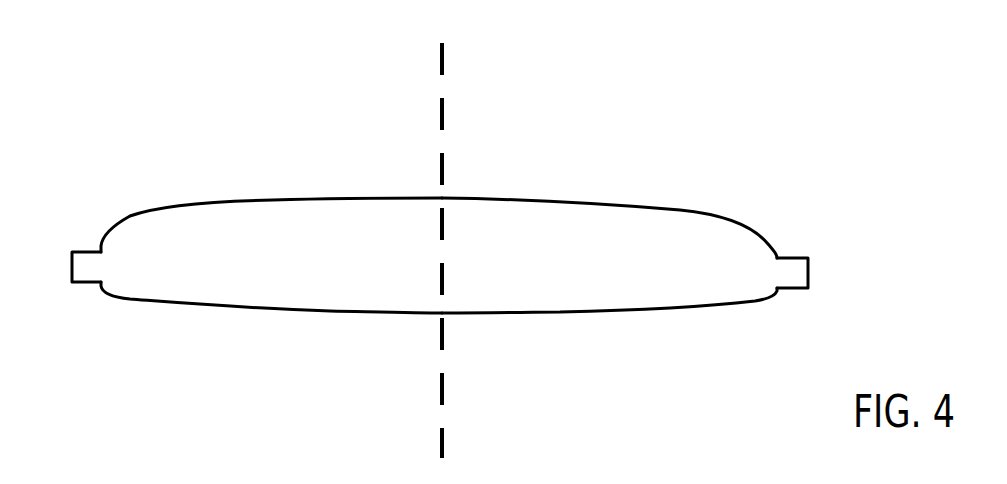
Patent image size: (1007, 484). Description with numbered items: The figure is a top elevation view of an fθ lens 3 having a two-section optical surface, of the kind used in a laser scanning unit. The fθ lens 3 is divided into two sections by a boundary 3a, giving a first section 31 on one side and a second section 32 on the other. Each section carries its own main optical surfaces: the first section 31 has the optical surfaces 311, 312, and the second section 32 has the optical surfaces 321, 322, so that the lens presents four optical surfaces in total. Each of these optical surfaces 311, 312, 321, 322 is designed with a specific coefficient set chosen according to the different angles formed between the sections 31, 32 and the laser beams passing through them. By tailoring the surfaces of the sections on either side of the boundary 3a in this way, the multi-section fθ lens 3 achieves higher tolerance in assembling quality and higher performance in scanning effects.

The fθ lens 3 is at (440, 250).
The boundary 3a is at (460, 113).
The first section 31 is at (257, 256).
The optical surface 311 is at (273, 199).
The optical surface 312 is at (280, 308).
The second section 32 is at (625, 257).
The optical surface 321 is at (615, 206).
The optical surface 322 is at (600, 313).